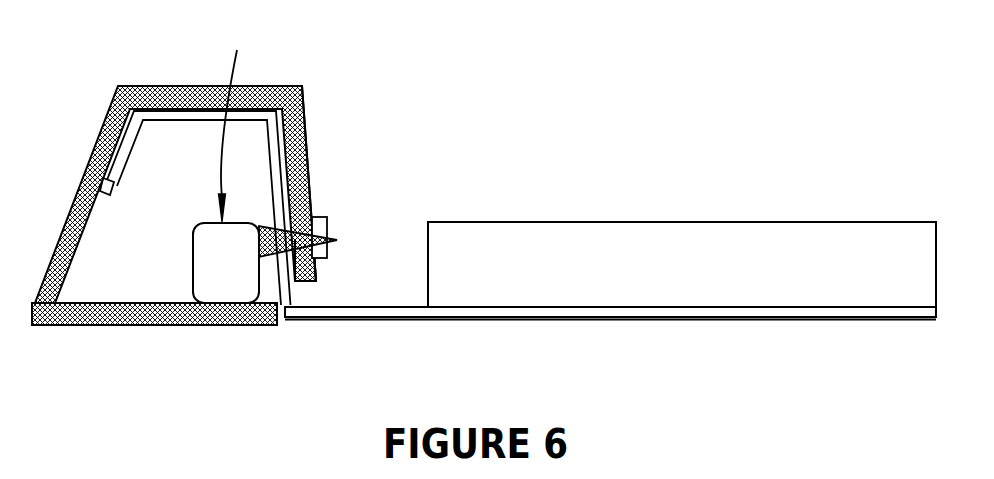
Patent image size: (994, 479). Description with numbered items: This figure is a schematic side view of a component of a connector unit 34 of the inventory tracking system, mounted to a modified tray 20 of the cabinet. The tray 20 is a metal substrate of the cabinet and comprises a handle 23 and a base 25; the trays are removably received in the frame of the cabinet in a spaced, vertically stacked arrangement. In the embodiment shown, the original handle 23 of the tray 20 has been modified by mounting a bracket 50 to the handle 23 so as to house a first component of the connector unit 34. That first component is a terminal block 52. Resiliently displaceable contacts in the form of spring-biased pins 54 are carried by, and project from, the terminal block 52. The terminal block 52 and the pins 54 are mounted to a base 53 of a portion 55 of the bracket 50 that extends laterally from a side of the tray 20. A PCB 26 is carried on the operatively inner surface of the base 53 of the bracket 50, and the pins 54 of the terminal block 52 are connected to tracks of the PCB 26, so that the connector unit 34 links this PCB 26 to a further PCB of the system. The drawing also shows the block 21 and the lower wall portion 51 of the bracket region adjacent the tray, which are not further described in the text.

The tray 20 is at (622, 319).
The block 21 is at (563, 222).
The handle 23 is at (106, 178).
The base 25 is at (492, 318).
The PCB 26 is at (311, 213).
The connector unit 34 is at (235, 122).
The bracket 50 is at (112, 106).
The lower wall portion 51 is at (316, 273).
The terminal block 52 is at (229, 275).
The base 53 is at (120, 325).
The spring-biased pins 54 is at (337, 233).
The portion 55 is at (253, 325).